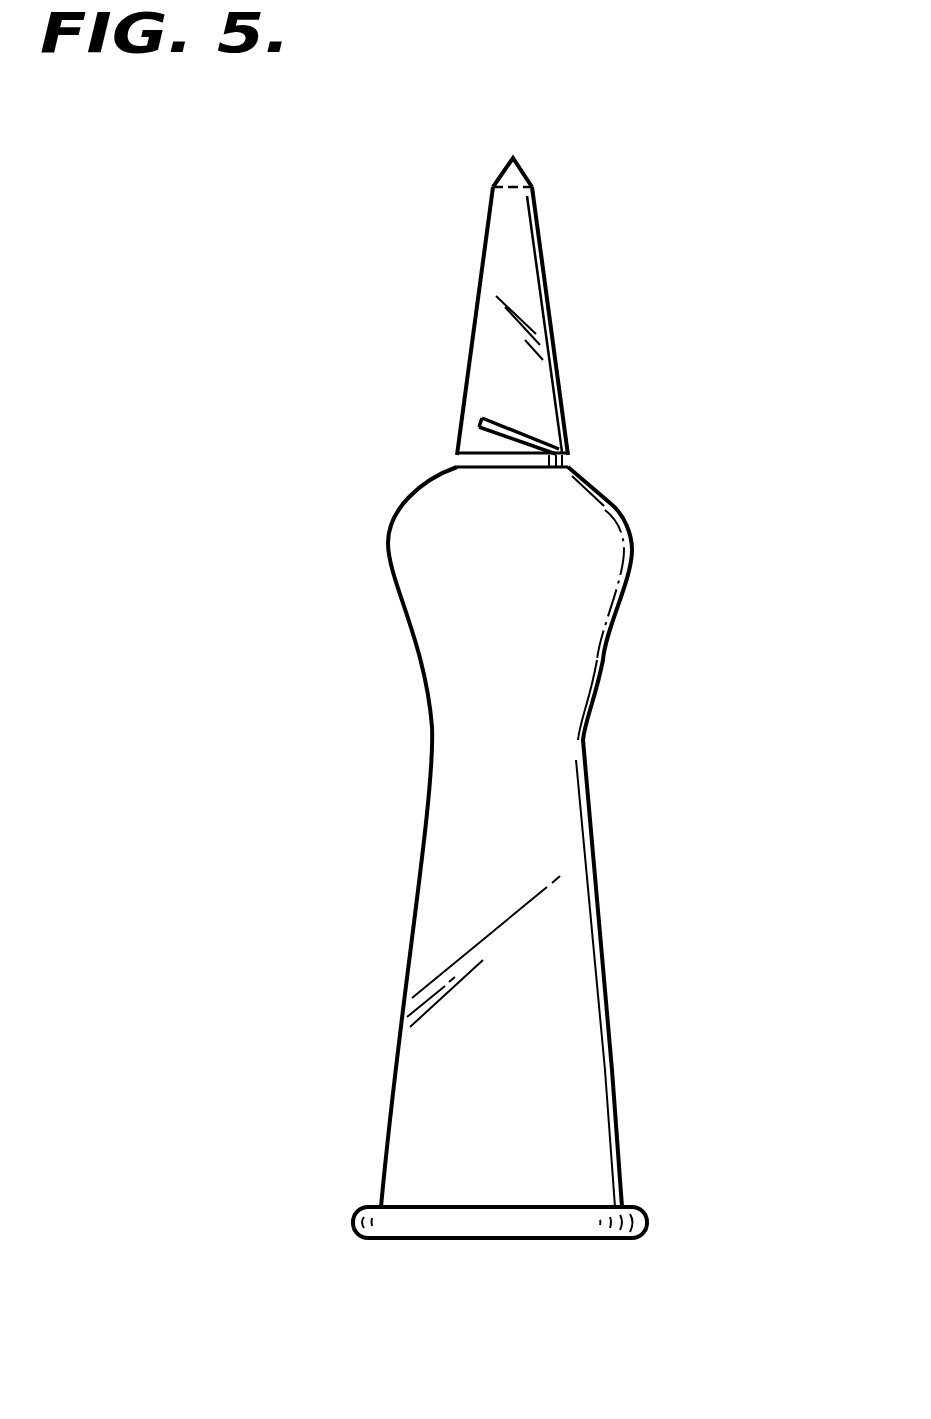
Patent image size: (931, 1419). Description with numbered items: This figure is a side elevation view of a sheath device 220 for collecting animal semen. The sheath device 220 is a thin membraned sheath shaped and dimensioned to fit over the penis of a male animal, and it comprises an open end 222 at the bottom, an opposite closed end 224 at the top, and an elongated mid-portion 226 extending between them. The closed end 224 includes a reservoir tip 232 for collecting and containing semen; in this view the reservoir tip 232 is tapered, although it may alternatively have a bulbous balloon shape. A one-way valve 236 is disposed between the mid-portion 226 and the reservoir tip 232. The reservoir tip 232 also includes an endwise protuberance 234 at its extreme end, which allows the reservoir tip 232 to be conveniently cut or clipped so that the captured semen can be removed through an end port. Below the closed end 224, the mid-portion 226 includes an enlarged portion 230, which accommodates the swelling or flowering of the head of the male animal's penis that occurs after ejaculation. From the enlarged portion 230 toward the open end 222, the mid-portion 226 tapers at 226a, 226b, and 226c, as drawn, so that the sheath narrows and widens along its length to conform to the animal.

The sheath device 220 is at (337, 427).
The open end 222 is at (488, 1240).
The closed end 224 is at (513, 158).
The elongated mid-portion 226 is at (430, 463).
The taper of mid-portion 226a is at (603, 657).
The taper of mid-portion 226b is at (603, 967).
The taper of mid-portion 226c is at (607, 498).
The enlarged portion 230 is at (635, 537).
The reservoir tip 232 is at (547, 300).
The endwise protuberance 234 is at (493, 177).
The one-way valve 236 is at (516, 427).